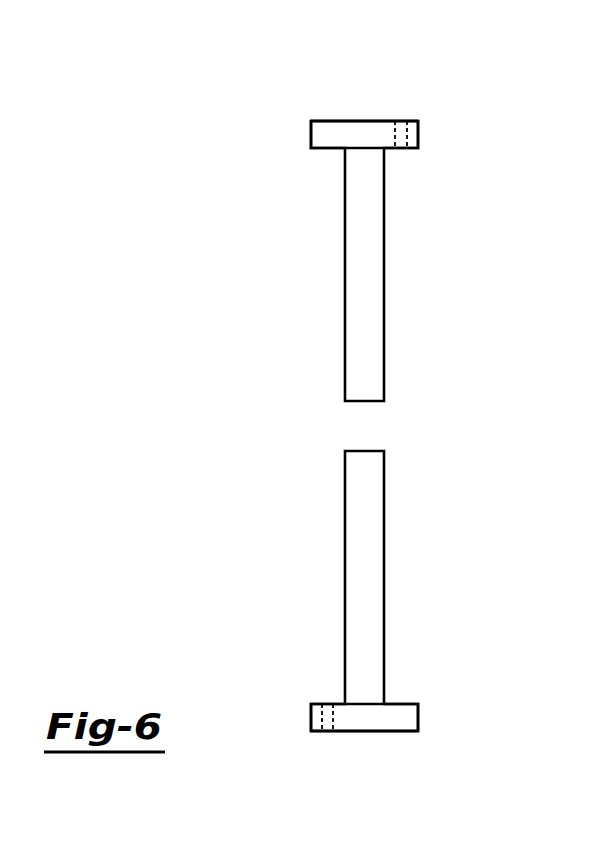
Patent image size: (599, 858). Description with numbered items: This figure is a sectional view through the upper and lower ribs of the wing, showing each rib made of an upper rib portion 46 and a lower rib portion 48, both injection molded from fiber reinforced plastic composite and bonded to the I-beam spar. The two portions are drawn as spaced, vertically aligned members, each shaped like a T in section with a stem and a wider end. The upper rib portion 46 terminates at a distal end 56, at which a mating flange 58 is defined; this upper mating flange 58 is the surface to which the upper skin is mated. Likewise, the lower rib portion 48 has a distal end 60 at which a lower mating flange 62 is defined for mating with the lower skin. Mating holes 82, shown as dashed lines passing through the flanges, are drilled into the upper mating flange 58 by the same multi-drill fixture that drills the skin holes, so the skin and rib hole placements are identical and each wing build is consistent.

The upper rib portion 46 is at (448, 75).
The lower rib portion 48 is at (436, 770).
The distal end of the upper rib 56 is at (281, 80).
The mating flange 58 is at (327, 121).
The distal end of the lower rib 60 is at (311, 665).
The lower mating flange 62 is at (396, 732).
The mating holes 82 is at (403, 121).